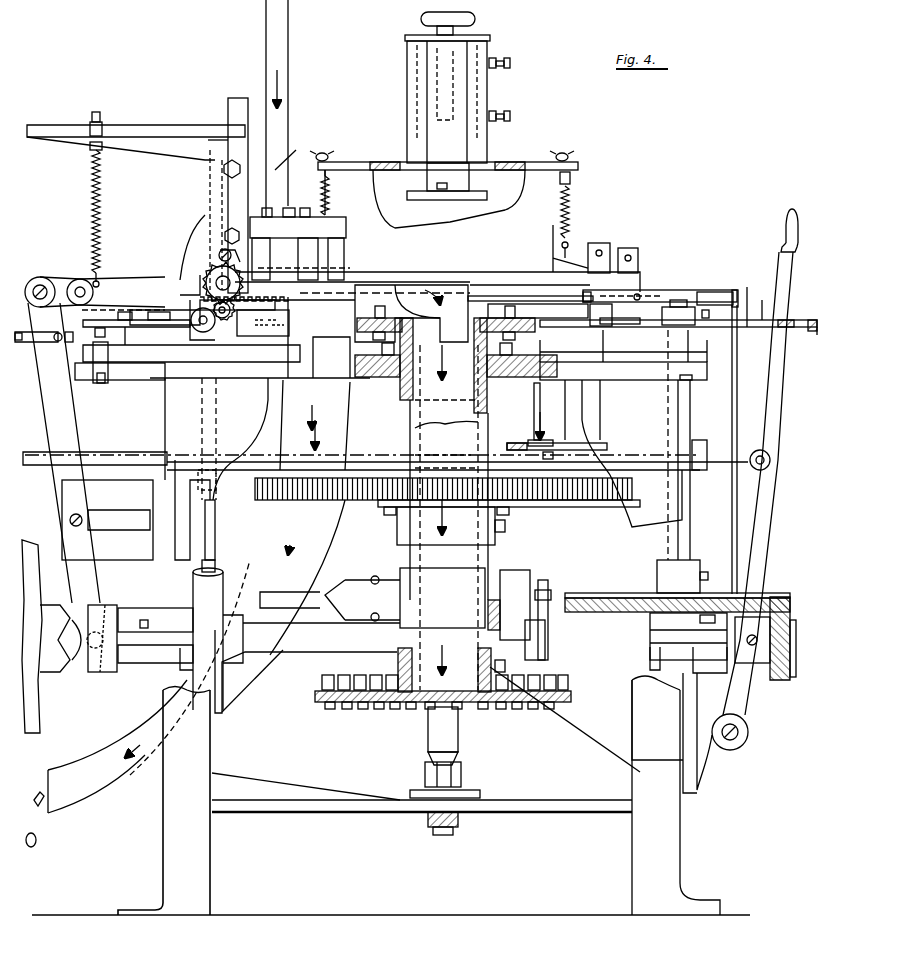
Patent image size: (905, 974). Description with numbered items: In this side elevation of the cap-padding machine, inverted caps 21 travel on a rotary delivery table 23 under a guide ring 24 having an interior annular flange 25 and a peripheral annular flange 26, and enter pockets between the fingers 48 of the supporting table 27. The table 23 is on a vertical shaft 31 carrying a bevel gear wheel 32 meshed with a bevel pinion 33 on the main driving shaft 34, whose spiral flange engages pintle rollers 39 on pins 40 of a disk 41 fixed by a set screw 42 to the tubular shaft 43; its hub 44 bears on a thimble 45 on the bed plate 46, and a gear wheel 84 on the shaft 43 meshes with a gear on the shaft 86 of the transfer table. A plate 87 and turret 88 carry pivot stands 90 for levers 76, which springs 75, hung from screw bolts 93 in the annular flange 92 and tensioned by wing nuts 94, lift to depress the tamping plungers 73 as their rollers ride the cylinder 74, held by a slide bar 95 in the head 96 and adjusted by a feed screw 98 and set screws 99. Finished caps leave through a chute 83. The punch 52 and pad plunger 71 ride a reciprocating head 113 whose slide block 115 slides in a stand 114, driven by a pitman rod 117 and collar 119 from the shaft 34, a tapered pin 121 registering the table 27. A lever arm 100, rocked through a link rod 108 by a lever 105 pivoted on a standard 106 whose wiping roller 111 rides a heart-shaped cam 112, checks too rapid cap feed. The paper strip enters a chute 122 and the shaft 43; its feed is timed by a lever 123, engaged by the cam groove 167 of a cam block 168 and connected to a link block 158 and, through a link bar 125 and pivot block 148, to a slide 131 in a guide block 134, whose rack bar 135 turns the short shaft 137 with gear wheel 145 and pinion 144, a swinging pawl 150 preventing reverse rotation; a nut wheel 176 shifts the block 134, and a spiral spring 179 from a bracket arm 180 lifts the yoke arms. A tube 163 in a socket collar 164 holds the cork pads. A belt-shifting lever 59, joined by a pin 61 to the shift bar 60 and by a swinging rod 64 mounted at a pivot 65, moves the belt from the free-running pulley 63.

The caps 21 is at (46, 840).
The rotary delivery table 23 is at (750, 296).
The guide ring 24 is at (764, 304).
The interior annular flange 25 is at (790, 318).
The peripheral annular flange 26 is at (808, 338).
The supporting table 27 is at (520, 316).
The vertical shaft 31 is at (680, 297).
The bevel gear wheel 32 is at (640, 598).
The bevel pinion 33 is at (780, 682).
The main driving shaft 34 is at (640, 640).
The pintle rollers 39 is at (322, 680).
The pins 40 is at (318, 694).
The disk 41 is at (320, 710).
The set screw 42 is at (500, 668).
The tubular shaft 43 is at (412, 433).
The hub 44 is at (520, 335).
The thimble 45 is at (398, 392).
The bed plate 46 is at (625, 375).
The fingers 48 is at (618, 327).
The punch 52 is at (277, 260).
The belt-shifting lever 59 is at (795, 212).
The shift bar 60 is at (130, 446).
The pin 61 is at (770, 458).
The free-running pulley 63 is at (40, 720).
The swinging rod 64 is at (620, 422).
The pivot 65 is at (546, 438).
The plunger 71 is at (310, 228).
The tamping plungers 73 is at (638, 268).
The cylinder 74 is at (448, 210).
The springs 75 is at (333, 195).
The levers 76 is at (576, 250).
The chute 83 is at (318, 545).
The gear wheel 84 is at (560, 500).
The shaft 86 is at (458, 732).
The plate 87 is at (641, 292).
The turret 88 is at (404, 232).
The pivot stands 90 is at (610, 246).
The annular flange 92 is at (578, 166).
The screw bolts 93 is at (570, 178).
The wing nuts 94 is at (330, 156).
The slide bar 95 is at (450, 168).
The head 96 is at (487, 90).
The feed screw 98 is at (468, 16).
The set screws 99 is at (514, 62).
The lever arm 100 is at (707, 300).
The lever 105 is at (625, 593).
The standard 106 is at (600, 732).
The link rod 108 is at (737, 377).
The wiping roller 111 is at (545, 580).
The heart-shaped cam 112 is at (548, 640).
The reciprocating head 113 is at (346, 228).
The stand 114 is at (190, 210).
The slide block 115 is at (228, 108).
The pitman rod 117 is at (215, 545).
The collar 119 is at (198, 608).
The pin 121 is at (340, 287).
The chute 122 is at (428, 268).
The lever 123 is at (70, 425).
The link bar 125 is at (85, 348).
The slide 131 is at (125, 318).
The guide block 134 is at (190, 325).
The rack bar 135 is at (275, 305).
The short shaft 137 is at (210, 278).
The pinion 144 is at (228, 318).
The gear wheel 145 is at (200, 282).
The pivot block 148 is at (100, 355).
The swinging pawl 150 is at (220, 252).
The link block 158 is at (62, 280).
The tube 163 is at (289, 52).
The socket collar 164 is at (296, 150).
The cam groove 167 is at (82, 672).
The cam block 168 is at (110, 672).
The nut wheel 176 is at (175, 320).
The spiral spring 179 is at (92, 208).
The bracket arm 180 is at (102, 126).